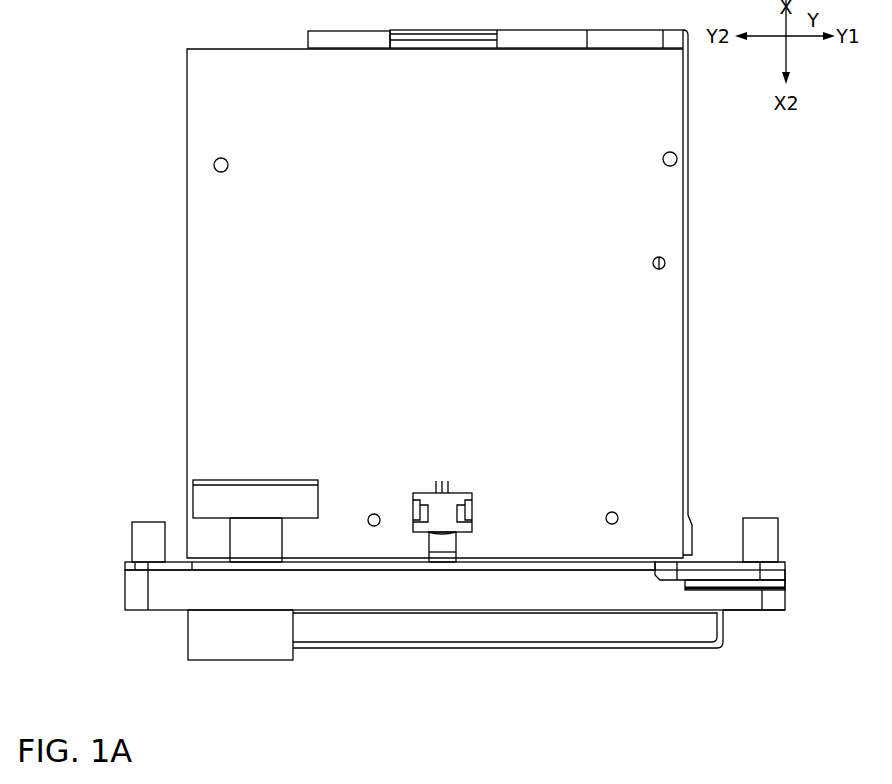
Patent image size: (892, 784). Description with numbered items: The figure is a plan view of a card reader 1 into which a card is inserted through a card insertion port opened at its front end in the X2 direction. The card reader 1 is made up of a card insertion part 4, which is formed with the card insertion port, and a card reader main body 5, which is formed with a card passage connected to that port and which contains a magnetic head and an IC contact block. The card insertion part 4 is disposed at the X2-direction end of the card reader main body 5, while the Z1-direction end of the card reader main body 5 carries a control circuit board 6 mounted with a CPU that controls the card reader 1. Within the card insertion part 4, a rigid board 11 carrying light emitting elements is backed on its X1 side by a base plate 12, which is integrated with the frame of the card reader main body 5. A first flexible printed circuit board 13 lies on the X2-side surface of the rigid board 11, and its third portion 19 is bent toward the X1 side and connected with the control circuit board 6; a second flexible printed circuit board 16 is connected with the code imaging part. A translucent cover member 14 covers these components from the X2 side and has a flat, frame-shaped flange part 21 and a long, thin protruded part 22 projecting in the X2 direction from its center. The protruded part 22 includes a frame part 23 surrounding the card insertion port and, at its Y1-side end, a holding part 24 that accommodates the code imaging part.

The card reader 1 is at (431, 294).
The card insertion part 4 is at (484, 629).
The card reader main body 5 is at (479, 294).
The control circuit board 6 is at (660, 316).
The rigid board 11 is at (777, 582).
The base plate 12 is at (777, 572).
The first flexible printed circuit board 13 is at (490, 521).
The cover member 14 is at (505, 671).
The second flexible printed circuit board 16 is at (242, 542).
The third portion 19 is at (443, 557).
The flange part 21 is at (743, 603).
The protruded part 22 is at (455, 675).
The frame part 23 is at (440, 632).
The holding part 24 is at (240, 659).